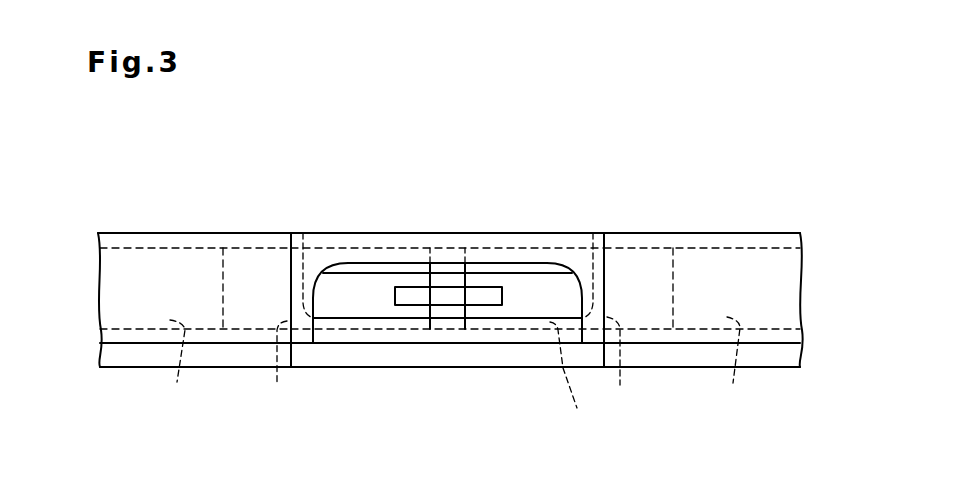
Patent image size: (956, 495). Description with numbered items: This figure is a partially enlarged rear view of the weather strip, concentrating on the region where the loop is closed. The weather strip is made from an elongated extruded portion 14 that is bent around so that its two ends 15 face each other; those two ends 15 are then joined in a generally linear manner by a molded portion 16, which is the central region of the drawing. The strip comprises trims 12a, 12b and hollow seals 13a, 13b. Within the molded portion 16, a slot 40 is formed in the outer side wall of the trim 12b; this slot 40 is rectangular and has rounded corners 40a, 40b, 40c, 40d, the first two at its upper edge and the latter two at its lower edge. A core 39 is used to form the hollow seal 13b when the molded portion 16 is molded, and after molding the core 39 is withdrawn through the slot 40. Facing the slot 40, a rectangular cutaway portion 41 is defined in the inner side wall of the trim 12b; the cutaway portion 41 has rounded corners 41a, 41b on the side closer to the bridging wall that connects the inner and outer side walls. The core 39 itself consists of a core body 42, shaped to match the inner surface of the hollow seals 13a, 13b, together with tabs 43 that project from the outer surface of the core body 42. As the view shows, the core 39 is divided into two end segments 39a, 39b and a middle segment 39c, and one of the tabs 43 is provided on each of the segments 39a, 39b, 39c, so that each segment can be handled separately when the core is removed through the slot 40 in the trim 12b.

The trim 12a is at (107, 288).
The trim 12b is at (408, 237).
The hollow seal 13a is at (456, 368).
The hollow seal 13b is at (583, 385).
The extruded portion 14 is at (148, 212).
The ends 15 is at (282, 236).
The molded portion 16 is at (447, 284).
The core 39 is at (449, 360).
The end segment 39a is at (377, 308).
The end segment 39b is at (513, 310).
The middle segment 39c is at (445, 364).
The slot 40 is at (370, 278).
The rounded corner 40a is at (302, 233).
The rounded corner 40b is at (593, 233).
The rounded corner 40c is at (635, 369).
The rounded corner 40d is at (258, 370).
The cutaway portion 41 is at (534, 260).
The rounded corner 41a is at (330, 273).
The rounded corner 41b is at (566, 277).
The core body 42 is at (658, 290).
The tabs 43 is at (450, 293).